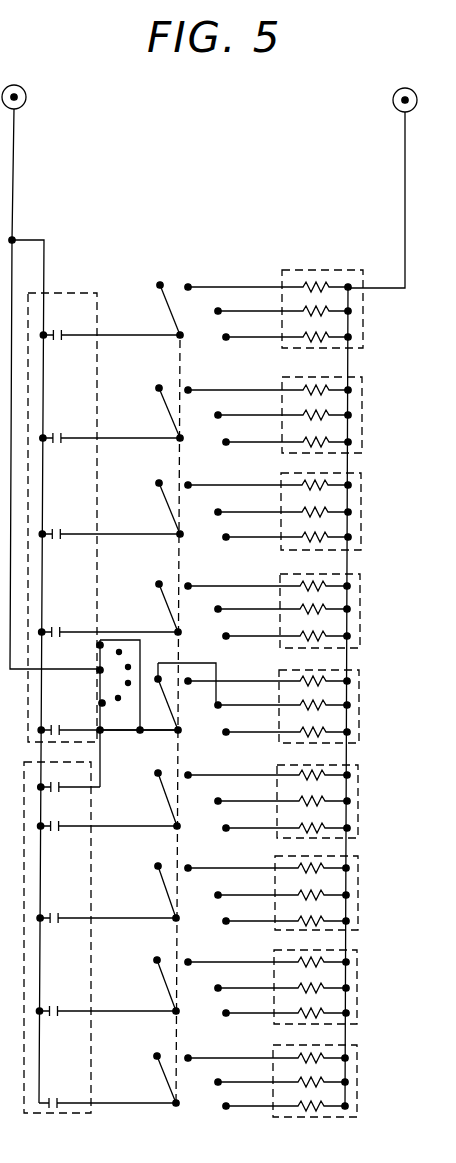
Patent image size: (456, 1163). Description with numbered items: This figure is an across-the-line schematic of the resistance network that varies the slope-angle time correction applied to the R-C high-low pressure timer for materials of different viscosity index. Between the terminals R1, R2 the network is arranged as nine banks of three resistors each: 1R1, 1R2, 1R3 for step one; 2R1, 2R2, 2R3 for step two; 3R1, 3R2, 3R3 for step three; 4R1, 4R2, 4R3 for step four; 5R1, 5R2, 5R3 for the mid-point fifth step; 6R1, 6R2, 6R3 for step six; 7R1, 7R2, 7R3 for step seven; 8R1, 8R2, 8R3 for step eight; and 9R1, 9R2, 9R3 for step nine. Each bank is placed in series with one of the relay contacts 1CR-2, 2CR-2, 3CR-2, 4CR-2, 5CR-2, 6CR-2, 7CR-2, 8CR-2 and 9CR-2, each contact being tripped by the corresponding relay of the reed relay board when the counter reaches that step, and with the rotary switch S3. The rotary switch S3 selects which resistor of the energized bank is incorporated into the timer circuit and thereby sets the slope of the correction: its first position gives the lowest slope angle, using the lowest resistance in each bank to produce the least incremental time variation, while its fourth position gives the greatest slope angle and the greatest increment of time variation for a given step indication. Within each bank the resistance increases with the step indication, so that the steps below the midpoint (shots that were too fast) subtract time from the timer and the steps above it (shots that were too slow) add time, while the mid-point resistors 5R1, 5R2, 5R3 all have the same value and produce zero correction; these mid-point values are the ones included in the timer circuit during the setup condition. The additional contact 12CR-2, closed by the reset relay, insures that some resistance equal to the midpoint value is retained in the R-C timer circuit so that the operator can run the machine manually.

The first terminal R1 is at (14, 82).
The second terminal R2 is at (404, 85).
The rotary switch S3 is at (196, 257).
The step-one slope-one resistor 1R1 is at (300, 287).
The step-one slope-two resistor 1R2 is at (298, 311).
The step-one slope-three resistor 1R3 is at (298, 337).
The step-two slope-one resistor 2R1 is at (300, 390).
The step-two slope-two resistor 2R2 is at (298, 415).
The step-two slope-three resistor 2R3 is at (298, 442).
The step-three slope-one resistor 3R1 is at (299, 485).
The step-three slope-two resistor 3R2 is at (297, 512).
The step-three slope-three resistor 3R3 is at (297, 537).
The step-four slope-one resistor 4R1 is at (297, 586).
The step-four slope-two resistor 4R2 is at (295, 609).
The step-four slope-three resistor 4R3 is at (295, 636).
The midpoint slope-one resistor 5R1 is at (297, 681).
The midpoint slope-two resistor 5R2 is at (295, 705).
The midpoint slope-three resistor 5R3 is at (295, 732).
The step-six slope-one resistor 6R1 is at (296, 775).
The step-six slope-two resistor 6R2 is at (294, 801).
The step-six slope-three resistor 6R3 is at (294, 828).
The step-seven slope-one resistor 7R1 is at (295, 868).
The step-seven slope-two resistor 7R2 is at (293, 895).
The step-seven slope-three resistor 7R3 is at (293, 921).
The step-eight slope-one resistor 8R1 is at (295, 962).
The step-eight slope-two resistor 8R2 is at (293, 988).
The step-eight slope-three resistor 8R3 is at (293, 1013).
The step-nine slope-one resistor 9R1 is at (295, 1058).
The step-nine slope-two resistor 9R2 is at (293, 1082).
The step-nine slope-three resistor 9R3 is at (293, 1106).
The relay contact 1CR-2 is at (76, 347).
The relay contact 2CR-2 is at (76, 450).
The relay contact 3CR-2 is at (75, 546).
The relay contact 4CR-2 is at (75, 644).
The relay contact 5CR-2 is at (72, 718).
The reset relay contact 12CR-2 is at (74, 799).
The relay contact 6CR-2 is at (74, 838).
The relay contact 7CR-2 is at (73, 930).
The relay contact 8CR-2 is at (72, 1023).
The relay contact 9CR-2 is at (70, 1091).